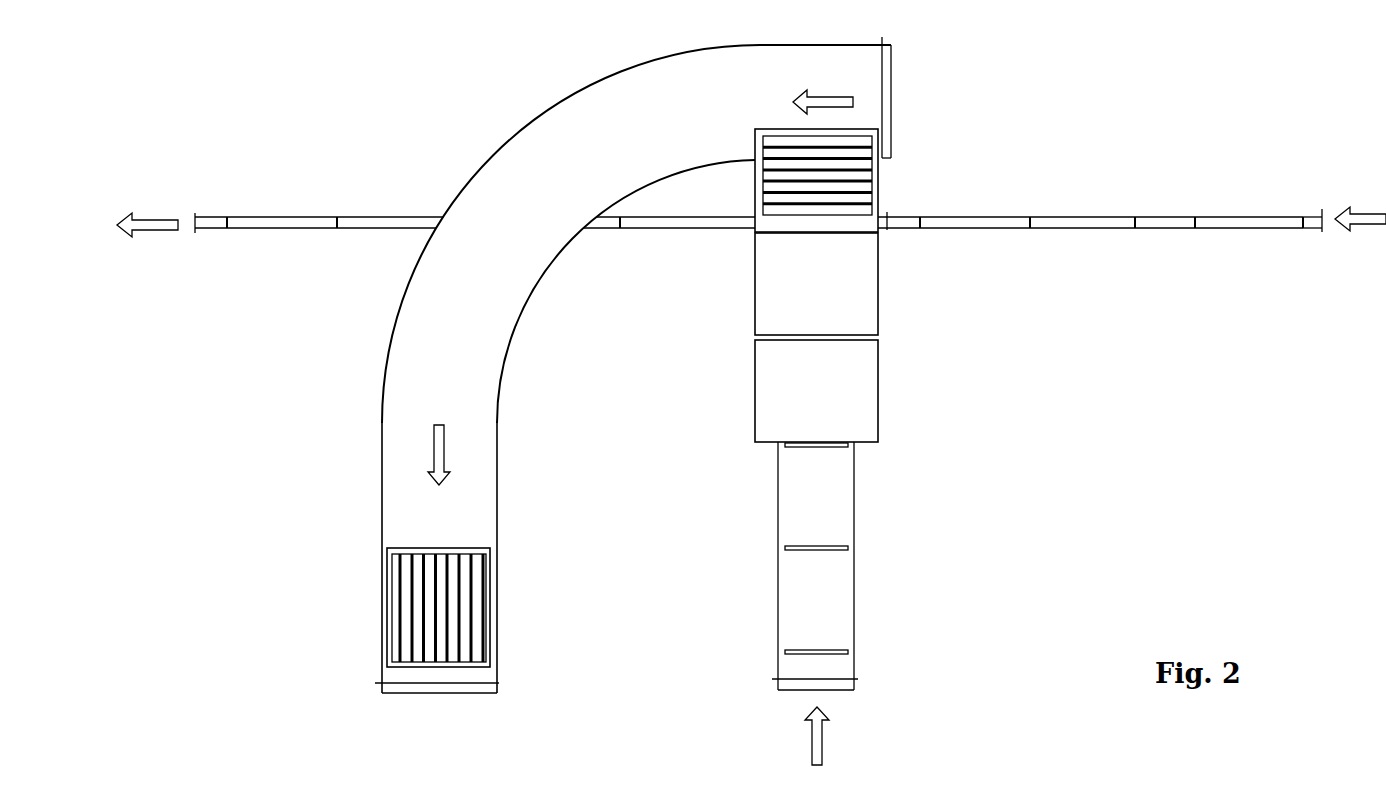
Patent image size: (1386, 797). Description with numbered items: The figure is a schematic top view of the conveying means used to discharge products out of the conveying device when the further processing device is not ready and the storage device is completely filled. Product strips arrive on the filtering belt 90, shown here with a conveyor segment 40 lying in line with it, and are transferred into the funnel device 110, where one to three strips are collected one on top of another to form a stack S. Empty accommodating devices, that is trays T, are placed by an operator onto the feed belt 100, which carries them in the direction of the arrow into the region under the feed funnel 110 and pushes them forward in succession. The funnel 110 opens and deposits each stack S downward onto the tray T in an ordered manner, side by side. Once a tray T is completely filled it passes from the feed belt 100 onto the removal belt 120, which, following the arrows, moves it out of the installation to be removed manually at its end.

The conveyor 40 is at (1252, 292).
The filtering belt 90 is at (1082, 292).
The feed belt 100 is at (863, 609).
The funnel device 110 is at (875, 161).
The removal belt 120 is at (492, 639).
The stack S is at (820, 165).
The accommodating device T is at (872, 203).